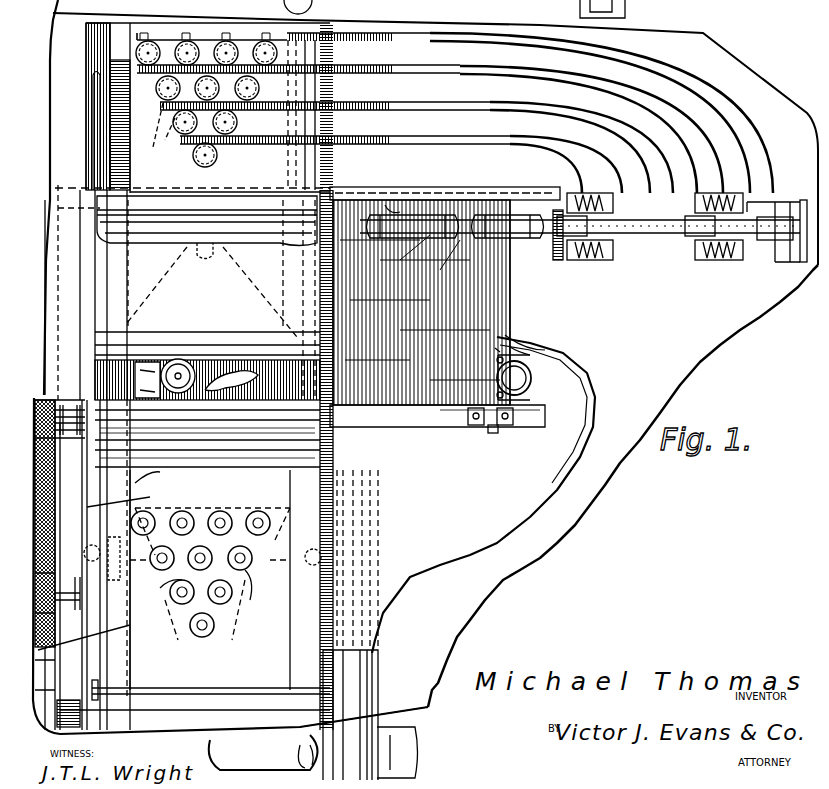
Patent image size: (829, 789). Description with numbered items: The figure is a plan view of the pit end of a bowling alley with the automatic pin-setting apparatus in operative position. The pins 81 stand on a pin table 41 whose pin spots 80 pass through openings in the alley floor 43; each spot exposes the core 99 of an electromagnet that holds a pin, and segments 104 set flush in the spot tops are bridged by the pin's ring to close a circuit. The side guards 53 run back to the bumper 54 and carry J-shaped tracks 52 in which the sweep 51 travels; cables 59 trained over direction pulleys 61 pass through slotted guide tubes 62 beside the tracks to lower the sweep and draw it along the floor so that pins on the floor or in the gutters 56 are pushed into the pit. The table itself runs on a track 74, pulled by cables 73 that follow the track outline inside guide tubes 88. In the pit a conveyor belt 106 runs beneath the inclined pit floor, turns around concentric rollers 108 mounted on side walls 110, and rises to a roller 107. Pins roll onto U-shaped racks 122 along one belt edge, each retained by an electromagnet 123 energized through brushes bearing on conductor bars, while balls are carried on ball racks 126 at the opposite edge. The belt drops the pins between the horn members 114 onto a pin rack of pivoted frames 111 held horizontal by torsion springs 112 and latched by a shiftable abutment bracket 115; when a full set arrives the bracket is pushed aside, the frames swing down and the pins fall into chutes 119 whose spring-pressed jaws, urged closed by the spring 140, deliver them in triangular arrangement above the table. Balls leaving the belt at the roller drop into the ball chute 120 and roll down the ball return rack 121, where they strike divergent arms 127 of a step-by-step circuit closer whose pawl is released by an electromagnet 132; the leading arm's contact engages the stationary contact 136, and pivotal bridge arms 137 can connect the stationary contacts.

The pin table 41 is at (210, 580).
The floor 43 is at (258, 475).
The sweep 51 is at (208, 690).
The tracks 52 is at (70, 487).
The side guards 53 is at (405, 470).
The bumper or buffer 54 is at (207, 266).
The gutters 56 is at (110, 714).
The cables 59 is at (97, 440).
The direction pulleys 61 is at (60, 412).
The guide tubes 62 is at (445, 485).
The cables 73 is at (93, 140).
The track 74 is at (125, 177).
The pin spots 80 is at (220, 512).
The pins 81 is at (226, 370).
The guide tubes 88 is at (88, 72).
The cores 99 is at (259, 586).
The segments 104 is at (155, 592).
The conveyor belt 106 is at (478, 430).
The roller 107 is at (512, 290).
The rollers 108 is at (358, 208).
The walls 110 is at (440, 200).
The frames 111 is at (648, 240).
The torsion springs 112 is at (727, 187).
The horn members 114 is at (438, 265).
The abutment bracket 115 is at (788, 262).
The chutes 119 is at (697, 82).
The ball chute 120 is at (567, 482).
The ball return rack 121 is at (380, 667).
The racks 122 is at (400, 267).
The electromagnet 123 is at (388, 228).
The ball racks 126 is at (540, 336).
The divergent arms 127 is at (350, 757).
The electromagnet 132 is at (320, 740).
The stationary contact 136 is at (485, 9).
The bridge arms 137 is at (263, 752).
The spring 140 is at (180, 150).